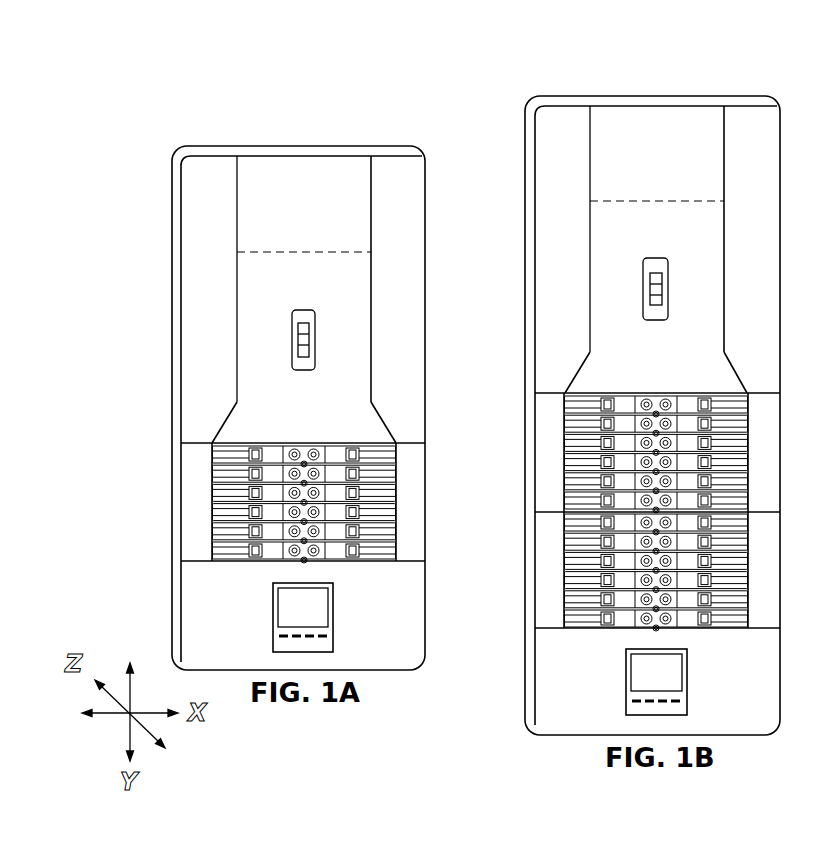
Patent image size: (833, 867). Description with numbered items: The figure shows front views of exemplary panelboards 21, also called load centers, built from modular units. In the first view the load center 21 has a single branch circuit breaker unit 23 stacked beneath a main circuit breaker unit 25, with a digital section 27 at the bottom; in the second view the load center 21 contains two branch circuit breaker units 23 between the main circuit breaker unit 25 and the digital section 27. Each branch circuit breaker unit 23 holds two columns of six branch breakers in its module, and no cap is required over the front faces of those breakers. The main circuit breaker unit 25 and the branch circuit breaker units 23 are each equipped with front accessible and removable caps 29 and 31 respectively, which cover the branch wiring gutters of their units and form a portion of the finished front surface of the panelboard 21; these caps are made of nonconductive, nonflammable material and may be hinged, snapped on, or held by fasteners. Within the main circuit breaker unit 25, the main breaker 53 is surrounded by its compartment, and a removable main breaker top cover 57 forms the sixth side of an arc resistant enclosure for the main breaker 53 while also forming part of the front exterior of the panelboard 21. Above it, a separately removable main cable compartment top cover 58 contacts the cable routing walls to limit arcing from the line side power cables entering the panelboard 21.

In FIG. 1A, the panelboard 21 is at (188, 134).
In FIG. 1B, the panelboard 21 is at (535, 90).
In FIG. 1A, the branch circuit breaker unit 23 is at (427, 492).
In FIG. 1B, the branch circuit breaker unit 23 is at (780, 440).
In FIG. 1A, the main circuit breaker unit 25 is at (427, 357).
In FIG. 1B, the main circuit breaker unit 25 is at (780, 305).
In FIG. 1A, the digital section 27 is at (427, 620).
In FIG. 1B, the digital section 27 is at (780, 690).
In FIG. 1A, the cap 29 is at (412, 312).
In FIG. 1B, the cap 29 is at (767, 266).
In FIG. 1A, the cap 31 is at (203, 513).
In FIG. 1B, the cap 31 is at (560, 468).
In FIG. 1A, the main breaker 53 is at (292, 330).
In FIG. 1B, the main breaker 53 is at (643, 281).
In FIG. 1A, the main breaker top cover 57 is at (320, 291).
In FIG. 1B, the main breaker top cover 57 is at (671, 243).
In FIG. 1A, the main cable compartment top cover 58 is at (320, 219).
In FIG. 1B, the main cable compartment top cover 58 is at (671, 171).